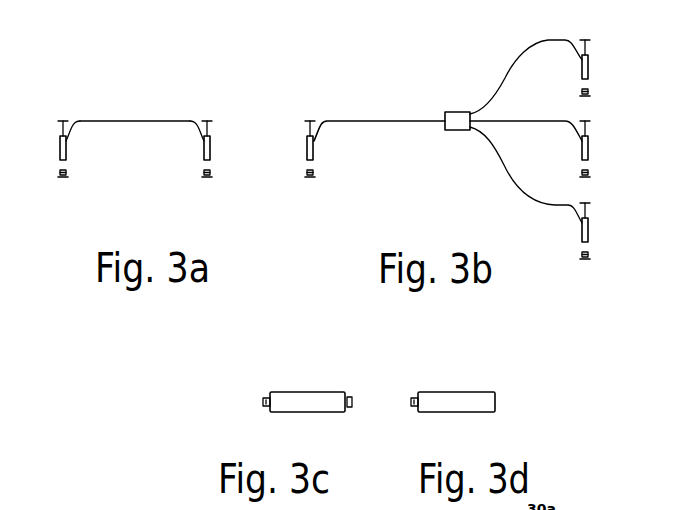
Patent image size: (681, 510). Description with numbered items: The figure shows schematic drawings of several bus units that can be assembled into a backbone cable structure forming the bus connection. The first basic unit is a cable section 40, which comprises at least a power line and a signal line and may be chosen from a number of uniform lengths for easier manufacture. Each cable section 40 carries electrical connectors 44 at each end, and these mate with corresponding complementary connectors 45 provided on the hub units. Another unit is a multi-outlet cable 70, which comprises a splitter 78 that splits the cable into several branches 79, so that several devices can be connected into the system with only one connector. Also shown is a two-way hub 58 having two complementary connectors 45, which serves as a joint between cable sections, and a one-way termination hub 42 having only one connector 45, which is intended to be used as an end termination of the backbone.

In FIG. 3A, the cable section 40 is at (159, 108).
In FIG. 3A, the electrical connector 44 is at (60, 131).
In FIG. 3B, the electrical connector 44 is at (596, 62).
In FIG. 3A, the complementary connector 45 is at (60, 171).
In FIG. 3B, the complementary connector 45 is at (594, 92).
In FIG. 3C, the complementary connector 45 is at (263, 401).
In FIG. 3B, the multi-outlet cable 70 is at (401, 105).
In FIG. 3B, the splitter 78 is at (456, 111).
In FIG. 3B, the branch 79 is at (505, 78).
In FIG. 3C, the two-way hub 58 is at (340, 372).
In FIG. 3D, the termination hub 42 is at (454, 372).